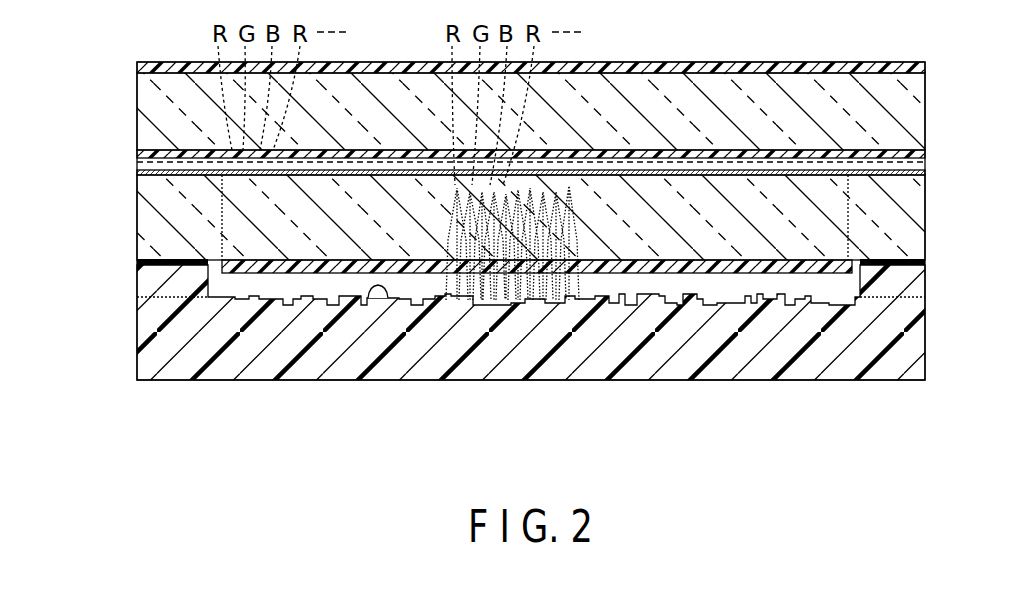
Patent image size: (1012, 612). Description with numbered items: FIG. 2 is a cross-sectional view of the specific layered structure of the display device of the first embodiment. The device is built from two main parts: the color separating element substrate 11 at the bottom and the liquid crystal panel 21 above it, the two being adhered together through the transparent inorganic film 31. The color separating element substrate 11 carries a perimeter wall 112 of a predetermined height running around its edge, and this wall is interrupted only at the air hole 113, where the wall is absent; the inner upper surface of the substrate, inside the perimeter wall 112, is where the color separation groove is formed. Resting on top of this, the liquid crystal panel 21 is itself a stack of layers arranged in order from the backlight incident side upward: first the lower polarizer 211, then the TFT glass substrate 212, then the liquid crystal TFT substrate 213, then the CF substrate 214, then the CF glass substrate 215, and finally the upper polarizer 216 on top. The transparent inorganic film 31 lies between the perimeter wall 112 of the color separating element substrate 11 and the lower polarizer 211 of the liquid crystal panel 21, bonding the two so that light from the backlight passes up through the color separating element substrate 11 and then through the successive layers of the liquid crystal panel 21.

The upper polarizer 216 is at (137, 66).
The CF glass substrate 215 is at (137, 100).
The CF substrate 214 is at (137, 153).
The liquid crystal TFT substrate 213 is at (137, 168).
The TFT glass substrate 212 is at (137, 218).
The lower polarizer 211 is at (745, 273).
The liquid crystal panel 21 is at (935, 62).
The transparent inorganic film 31 is at (137, 261).
The perimeter wall 112 is at (137, 285).
The air hole 113 is at (379, 299).
The color separating element substrate 11 is at (935, 265).